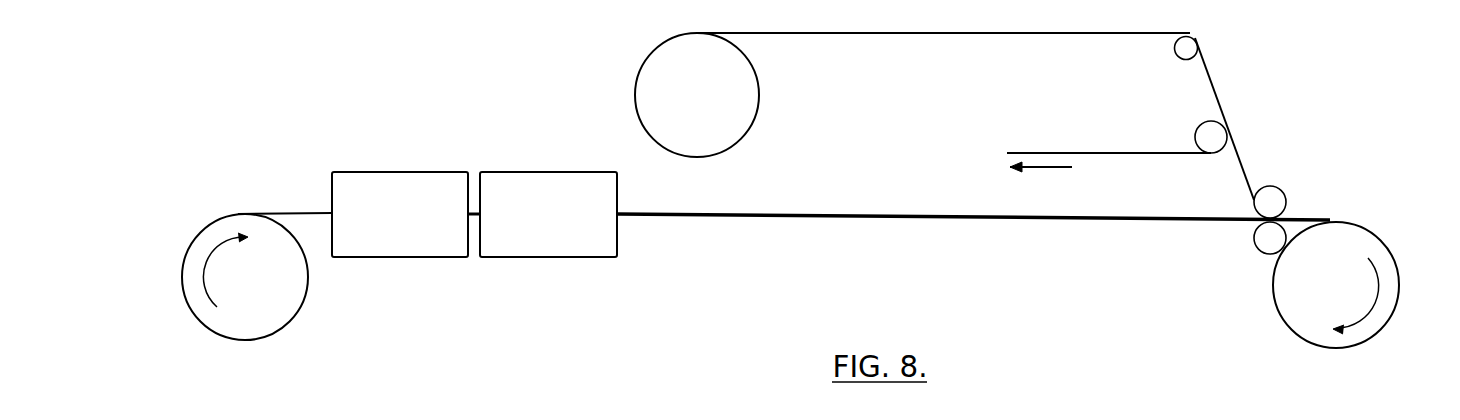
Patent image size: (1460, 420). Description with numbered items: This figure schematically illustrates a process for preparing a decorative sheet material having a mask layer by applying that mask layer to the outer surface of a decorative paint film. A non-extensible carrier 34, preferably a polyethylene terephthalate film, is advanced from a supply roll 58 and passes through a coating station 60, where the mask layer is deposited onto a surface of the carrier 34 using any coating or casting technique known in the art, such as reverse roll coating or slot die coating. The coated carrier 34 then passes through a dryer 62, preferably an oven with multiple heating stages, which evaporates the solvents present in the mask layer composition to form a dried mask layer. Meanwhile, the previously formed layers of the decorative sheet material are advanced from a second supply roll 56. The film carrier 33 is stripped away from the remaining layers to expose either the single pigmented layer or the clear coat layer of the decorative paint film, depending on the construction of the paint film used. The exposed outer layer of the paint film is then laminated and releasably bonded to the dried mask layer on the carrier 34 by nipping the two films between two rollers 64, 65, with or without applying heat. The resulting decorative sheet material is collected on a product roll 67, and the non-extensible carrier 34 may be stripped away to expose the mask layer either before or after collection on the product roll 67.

The supply roll 58 is at (220, 230).
The non-extensible carrier 34 is at (300, 211).
The coating station 60 is at (427, 171).
The dryer 62 is at (542, 171).
The supply roll 56 is at (658, 73).
The film carrier 33 is at (1112, 152).
The roller 64 is at (1275, 200).
The roller 65 is at (1260, 245).
The product roll 67 is at (1362, 243).